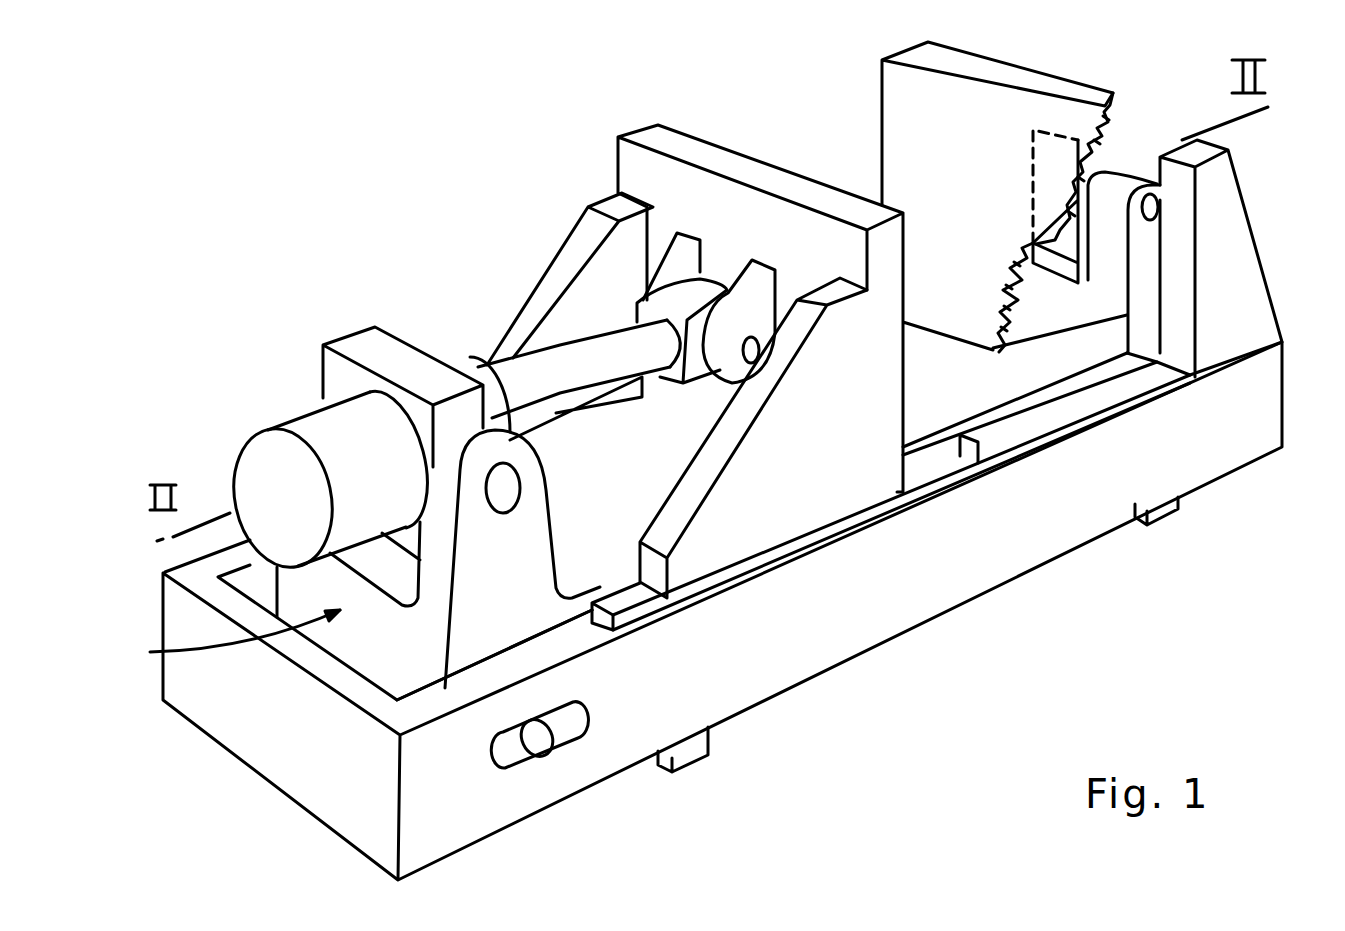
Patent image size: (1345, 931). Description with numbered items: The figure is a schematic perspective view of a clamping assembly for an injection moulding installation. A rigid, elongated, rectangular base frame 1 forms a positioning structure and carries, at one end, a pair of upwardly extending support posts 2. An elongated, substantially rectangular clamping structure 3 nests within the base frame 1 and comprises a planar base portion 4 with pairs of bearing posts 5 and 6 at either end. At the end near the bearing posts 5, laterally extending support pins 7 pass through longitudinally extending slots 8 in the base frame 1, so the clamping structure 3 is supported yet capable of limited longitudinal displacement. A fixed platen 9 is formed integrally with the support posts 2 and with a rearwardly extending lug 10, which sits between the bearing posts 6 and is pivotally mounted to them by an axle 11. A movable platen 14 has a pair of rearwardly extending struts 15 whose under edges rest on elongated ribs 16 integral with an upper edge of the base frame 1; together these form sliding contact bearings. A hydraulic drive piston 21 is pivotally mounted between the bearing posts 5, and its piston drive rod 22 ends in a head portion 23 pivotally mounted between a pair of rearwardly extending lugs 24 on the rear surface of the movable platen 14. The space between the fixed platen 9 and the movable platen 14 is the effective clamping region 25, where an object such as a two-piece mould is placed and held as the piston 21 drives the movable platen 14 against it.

The base frame 1 is at (847, 613).
The support posts 2 is at (1250, 321).
The clamping structure 3 is at (150, 652).
The base portion 4 is at (953, 394).
The bearing posts 5 is at (515, 545).
The bearing posts 6 is at (1114, 190).
The support pins 7 is at (538, 742).
The slots 8 is at (565, 730).
The fixed platen 9 is at (993, 80).
The lug 10 is at (1100, 165).
The axle 11 is at (1153, 207).
The movable platen 14 is at (690, 147).
The struts 15 is at (555, 265).
The ribs 16 is at (965, 455).
The hydraulic drive piston 21 is at (313, 438).
The piston drive rod 22 is at (555, 375).
The head portion 23 is at (710, 296).
The lugs 24 is at (767, 310).
The clamping region 25 is at (848, 113).